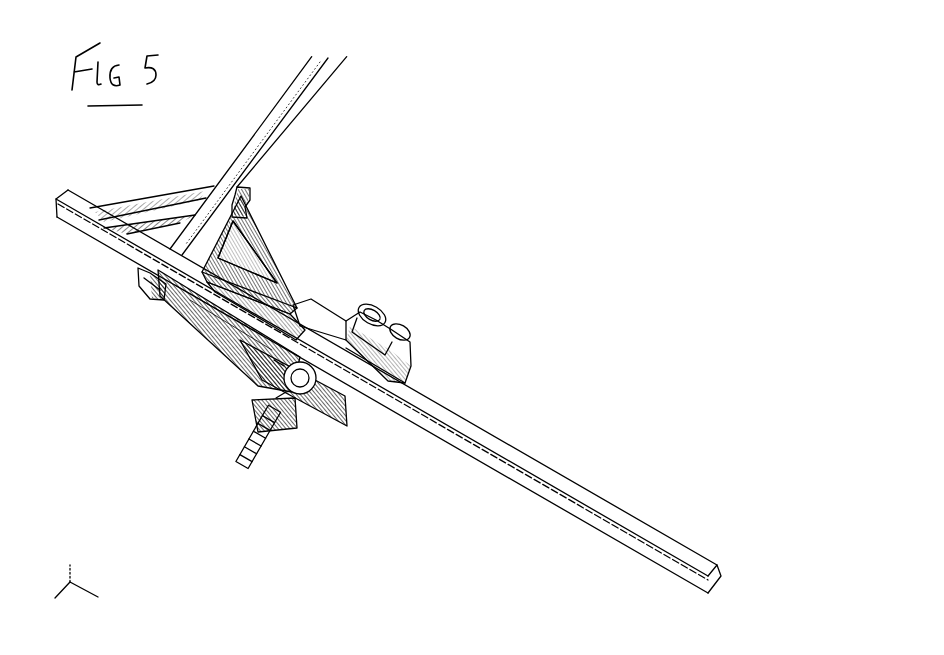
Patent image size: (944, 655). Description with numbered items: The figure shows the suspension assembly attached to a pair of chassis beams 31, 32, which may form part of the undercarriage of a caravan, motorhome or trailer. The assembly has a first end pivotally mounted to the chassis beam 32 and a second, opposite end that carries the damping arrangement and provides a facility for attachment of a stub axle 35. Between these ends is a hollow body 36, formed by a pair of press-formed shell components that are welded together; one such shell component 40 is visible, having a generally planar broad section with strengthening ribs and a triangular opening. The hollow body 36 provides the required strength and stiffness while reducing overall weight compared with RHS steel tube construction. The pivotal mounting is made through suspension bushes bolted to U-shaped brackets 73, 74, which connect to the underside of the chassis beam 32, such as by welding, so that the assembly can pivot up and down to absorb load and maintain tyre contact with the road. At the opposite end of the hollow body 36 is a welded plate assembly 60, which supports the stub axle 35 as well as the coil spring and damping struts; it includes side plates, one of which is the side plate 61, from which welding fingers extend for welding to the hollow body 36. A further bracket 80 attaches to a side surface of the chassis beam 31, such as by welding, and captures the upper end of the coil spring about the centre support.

The chassis beam 31 is at (545, 465).
The chassis beam 32 is at (287, 100).
The stub axle 35 is at (252, 463).
The hollow body 36 is at (263, 247).
The shell component 40 is at (267, 290).
The welded plate assembly 60 is at (297, 423).
The side plate 61 is at (267, 380).
The U-shaped bracket 73 is at (147, 293).
The U-shaped bracket 74 is at (253, 203).
The bracket 80 is at (413, 352).